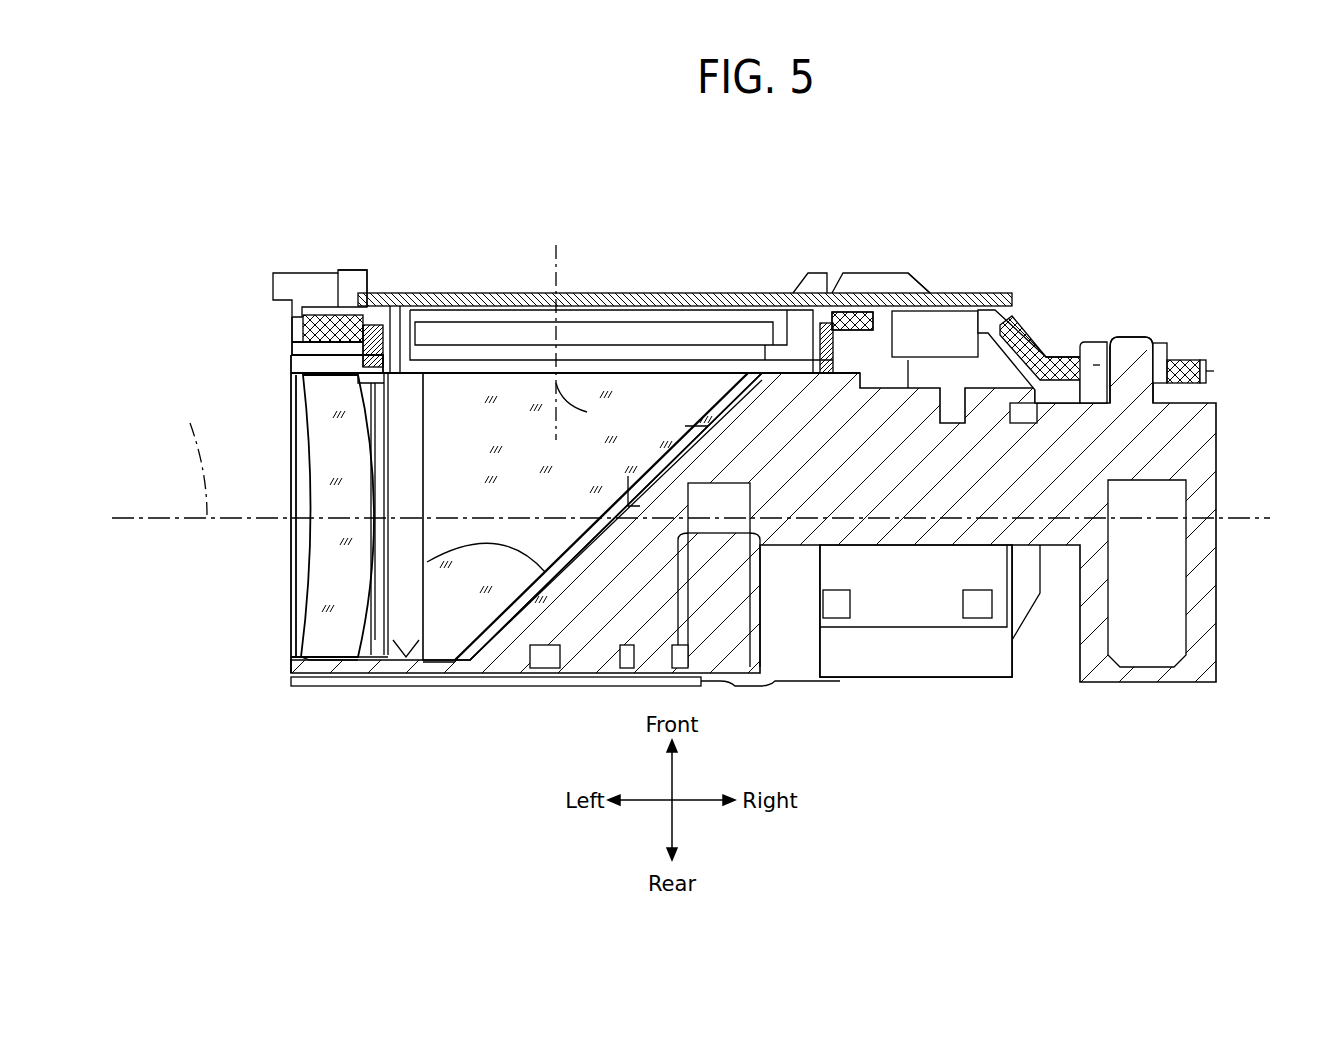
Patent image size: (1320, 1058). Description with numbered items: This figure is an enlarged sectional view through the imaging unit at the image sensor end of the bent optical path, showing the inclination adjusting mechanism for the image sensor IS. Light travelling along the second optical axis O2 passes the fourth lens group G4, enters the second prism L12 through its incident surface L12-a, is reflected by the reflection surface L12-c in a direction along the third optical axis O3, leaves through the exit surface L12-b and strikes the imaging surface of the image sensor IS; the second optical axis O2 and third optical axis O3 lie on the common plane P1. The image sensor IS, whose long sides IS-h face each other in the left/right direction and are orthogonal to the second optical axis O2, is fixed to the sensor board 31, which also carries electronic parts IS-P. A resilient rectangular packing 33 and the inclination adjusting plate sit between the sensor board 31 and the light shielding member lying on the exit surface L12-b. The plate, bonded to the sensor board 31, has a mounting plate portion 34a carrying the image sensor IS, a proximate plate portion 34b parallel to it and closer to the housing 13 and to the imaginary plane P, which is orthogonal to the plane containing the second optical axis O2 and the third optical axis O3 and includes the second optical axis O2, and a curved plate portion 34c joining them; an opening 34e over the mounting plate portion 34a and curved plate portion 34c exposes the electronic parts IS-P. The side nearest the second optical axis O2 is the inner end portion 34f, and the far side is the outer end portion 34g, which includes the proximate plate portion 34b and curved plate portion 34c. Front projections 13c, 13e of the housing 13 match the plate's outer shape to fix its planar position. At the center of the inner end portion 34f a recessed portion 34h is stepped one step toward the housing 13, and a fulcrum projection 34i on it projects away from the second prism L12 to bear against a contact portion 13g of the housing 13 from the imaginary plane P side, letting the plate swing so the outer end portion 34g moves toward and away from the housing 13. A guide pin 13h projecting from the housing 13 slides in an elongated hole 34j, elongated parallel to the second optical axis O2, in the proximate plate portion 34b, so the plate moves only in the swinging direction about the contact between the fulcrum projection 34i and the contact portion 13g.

The housing 13 is at (275, 288).
The front projection 13c is at (345, 305).
The front projection 13e is at (916, 292).
The contact portion 13g is at (300, 335).
The guide pin 13h is at (1130, 358).
The sensor board 31 is at (608, 295).
The packing 33 is at (432, 300).
The mounting plate portion 34a is at (852, 321).
The proximate plate portion 34b is at (1206, 371).
The curved plate portion 34c is at (1007, 332).
The opening 34e is at (1015, 335).
The inner end portion 34f is at (372, 330).
The outer end portion 34g is at (860, 310).
The recessed portion 34h is at (353, 305).
The fulcrum projection 34i is at (318, 318).
The elongated hole 34j is at (1100, 367).
The image sensor IS is at (645, 343).
The long sides of image sensor IS-h is at (378, 340).
The electronic parts IS-P is at (962, 318).
The second optical axis O2 is at (187, 455).
The third optical axis O3 is at (566, 330).
The second prism L12 is at (467, 463).
The incident surface L12-a is at (437, 510).
The exit surface L12-b is at (470, 375).
The reflection surface L12-c is at (390, 560).
The fourth lens group G4 is at (327, 645).
The imaginary plane P is at (697, 518).
The common plane P1 is at (749, 179).